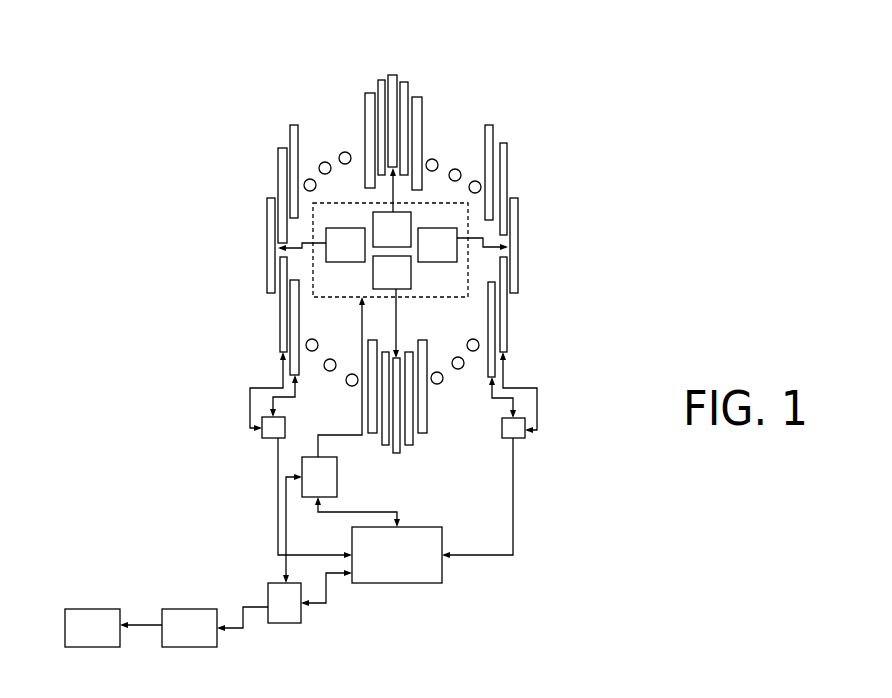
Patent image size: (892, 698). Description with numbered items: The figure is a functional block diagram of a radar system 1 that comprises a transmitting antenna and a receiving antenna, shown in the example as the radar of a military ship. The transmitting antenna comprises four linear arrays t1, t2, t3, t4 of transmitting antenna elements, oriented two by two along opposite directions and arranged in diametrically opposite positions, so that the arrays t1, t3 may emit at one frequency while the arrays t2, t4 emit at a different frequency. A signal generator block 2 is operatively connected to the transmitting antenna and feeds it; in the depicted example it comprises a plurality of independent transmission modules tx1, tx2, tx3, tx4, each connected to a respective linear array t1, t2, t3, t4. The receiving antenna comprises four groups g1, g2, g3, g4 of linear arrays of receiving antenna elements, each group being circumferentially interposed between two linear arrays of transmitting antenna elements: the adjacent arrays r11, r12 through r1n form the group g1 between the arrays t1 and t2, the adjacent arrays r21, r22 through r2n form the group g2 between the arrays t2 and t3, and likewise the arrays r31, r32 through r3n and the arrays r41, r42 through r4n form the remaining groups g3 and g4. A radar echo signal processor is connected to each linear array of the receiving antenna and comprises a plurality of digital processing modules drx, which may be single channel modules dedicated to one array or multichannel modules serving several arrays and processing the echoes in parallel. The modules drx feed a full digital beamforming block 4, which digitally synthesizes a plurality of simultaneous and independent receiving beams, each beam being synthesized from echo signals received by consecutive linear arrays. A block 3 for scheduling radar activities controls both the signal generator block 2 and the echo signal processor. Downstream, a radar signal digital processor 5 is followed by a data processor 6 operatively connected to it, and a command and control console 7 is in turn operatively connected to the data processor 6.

The radar system 1 is at (128, 278).
The signal generator block 2 is at (468, 227).
The block for scheduling radar activities 3 is at (302, 487).
The full digital beamforming block 4 is at (442, 575).
The radar signal digital processor 5 is at (301, 615).
The data processor 6 is at (178, 609).
The command and control console 7 is at (95, 609).
The linear array of transmitting antenna elements t1 is at (518, 250).
The linear array of transmitting antenna elements t2 is at (400, 452).
The linear array of transmitting antenna elements t3 is at (267, 242).
The linear array of transmitting antenna elements t4 is at (393, 73).
The transmission module tx1 is at (437, 245).
The transmission module tx2 is at (392, 272).
The transmission module tx3 is at (345, 245).
The transmission module tx4 is at (392, 229).
The linear array of receiving antenna elements r11 is at (507, 303).
The linear array of receiving antenna elements r12 is at (495, 365).
The linear array of receiving antenna elements r1n is at (413, 440).
The linear array of receiving antenna elements r21 is at (387, 446).
The linear array of receiving antenna elements r22 is at (375, 434).
The linear array of receiving antenna elements r2n is at (280, 315).
The linear array of receiving antenna elements r31 is at (278, 158).
The linear array of receiving antenna elements r32 is at (290, 138).
The linear array of receiving antenna elements r3n is at (378, 82).
The linear array of receiving antenna elements r41 is at (408, 90).
The linear array of receiving antenna elements r42 is at (422, 120).
The linear array of receiving antenna elements r4n is at (507, 167).
The group of linear arrays of receiving antenna elements g1 is at (455, 372).
The group of linear arrays of receiving antenna elements g2 is at (332, 373).
The group of linear arrays of receiving antenna elements g3 is at (327, 164).
The group of linear arrays of receiving antenna elements g4 is at (453, 168).
The digital processing module drx is at (270, 440).